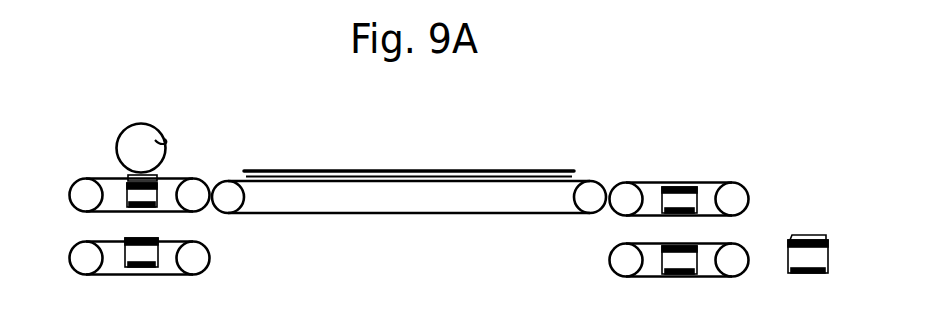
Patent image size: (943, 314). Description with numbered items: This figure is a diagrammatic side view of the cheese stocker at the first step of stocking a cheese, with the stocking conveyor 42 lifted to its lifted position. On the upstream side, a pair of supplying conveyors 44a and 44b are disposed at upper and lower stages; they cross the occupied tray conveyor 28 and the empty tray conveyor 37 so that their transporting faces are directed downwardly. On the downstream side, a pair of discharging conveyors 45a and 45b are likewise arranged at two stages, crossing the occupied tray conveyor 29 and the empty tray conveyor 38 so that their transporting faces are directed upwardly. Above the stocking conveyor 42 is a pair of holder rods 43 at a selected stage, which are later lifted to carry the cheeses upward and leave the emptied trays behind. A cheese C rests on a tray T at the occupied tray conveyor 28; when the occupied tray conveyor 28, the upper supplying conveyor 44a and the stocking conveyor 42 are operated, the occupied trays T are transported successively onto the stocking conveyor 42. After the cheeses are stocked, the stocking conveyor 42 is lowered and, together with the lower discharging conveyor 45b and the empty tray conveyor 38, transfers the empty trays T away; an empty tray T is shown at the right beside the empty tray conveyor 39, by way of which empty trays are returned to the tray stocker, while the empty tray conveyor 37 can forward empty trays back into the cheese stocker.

The supplying conveyor 44a is at (103, 178).
The supplying conveyor 44b is at (114, 242).
The occupied tray conveyor 28 is at (122, 162).
The cheese C is at (157, 141).
The tray T is at (157, 177).
The empty tray conveyor 37 is at (156, 239).
The holder rods 43 is at (370, 170).
The stocking conveyor 42 is at (470, 177).
The discharging conveyor 45a is at (718, 182).
The discharging conveyor 45b is at (717, 244).
The occupied tray conveyor 29 is at (680, 186).
The empty tray conveyor 38 is at (683, 235).
The empty tray conveyor 39 is at (814, 236).